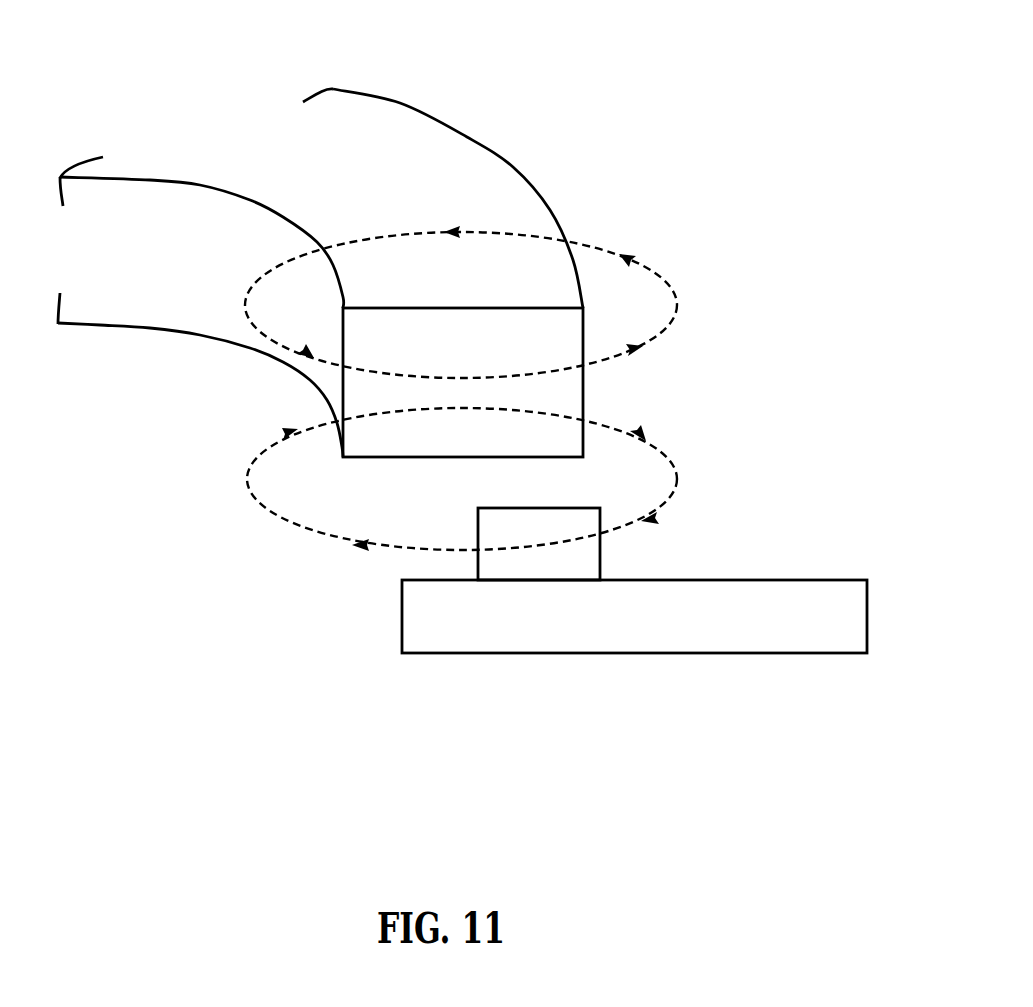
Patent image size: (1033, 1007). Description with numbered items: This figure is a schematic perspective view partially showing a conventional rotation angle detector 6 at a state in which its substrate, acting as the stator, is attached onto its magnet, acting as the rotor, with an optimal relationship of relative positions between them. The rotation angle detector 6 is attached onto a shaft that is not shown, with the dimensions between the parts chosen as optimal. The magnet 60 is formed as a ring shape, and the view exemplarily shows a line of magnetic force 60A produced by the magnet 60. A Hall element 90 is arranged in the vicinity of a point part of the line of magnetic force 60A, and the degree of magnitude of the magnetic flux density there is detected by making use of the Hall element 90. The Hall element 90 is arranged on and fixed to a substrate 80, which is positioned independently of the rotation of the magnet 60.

The rotation angle detector 6 is at (609, 94).
The magnet 60 is at (513, 167).
The line of magnetic force 60A is at (677, 300).
The Hall element 90 is at (600, 557).
The substrate 80 is at (438, 653).